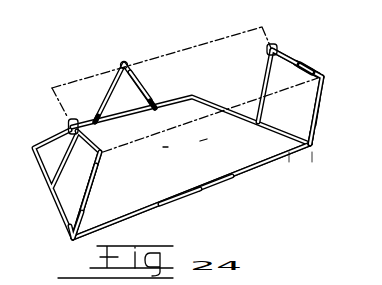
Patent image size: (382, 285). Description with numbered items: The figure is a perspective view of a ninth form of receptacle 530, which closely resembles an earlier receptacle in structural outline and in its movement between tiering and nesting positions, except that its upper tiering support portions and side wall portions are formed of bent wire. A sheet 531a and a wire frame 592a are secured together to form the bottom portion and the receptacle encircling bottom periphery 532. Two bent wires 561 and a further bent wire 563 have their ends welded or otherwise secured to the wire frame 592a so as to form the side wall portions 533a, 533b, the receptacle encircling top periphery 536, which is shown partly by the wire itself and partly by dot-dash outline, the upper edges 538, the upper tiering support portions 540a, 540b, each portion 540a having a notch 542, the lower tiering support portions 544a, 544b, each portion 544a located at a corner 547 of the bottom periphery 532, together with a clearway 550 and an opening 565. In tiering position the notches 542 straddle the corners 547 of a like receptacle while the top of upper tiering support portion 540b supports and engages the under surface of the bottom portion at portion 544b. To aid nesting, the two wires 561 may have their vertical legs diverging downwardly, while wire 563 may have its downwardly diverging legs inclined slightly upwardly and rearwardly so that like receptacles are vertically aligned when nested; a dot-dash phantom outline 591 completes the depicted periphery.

The receptacle 530 is at (289, 157).
The sheet 531a is at (240, 174).
The receptacle encircling bottom periphery 532 is at (56, 203).
The side wall portion 533a is at (91, 183).
The side wall portion 533b is at (140, 78).
The receptacle encircling top periphery 536 is at (272, 47).
The upper edge 538 is at (143, 25).
The upper tiering support portion 540a is at (102, 140).
The upper tiering support portion 540b is at (131, 57).
The notch 542 is at (306, 68).
The lower tiering support portion 544a is at (71, 240).
The lower tiering support portion 544b is at (105, 108).
The corner 547 is at (313, 135).
The clearway 550 is at (196, 191).
The bent wire 561 is at (85, 211).
The bent wire 563 is at (153, 100).
The opening 565 is at (263, 162).
The phantom panel 591 is at (185, 90).
The rail segment 592a is at (214, 185).